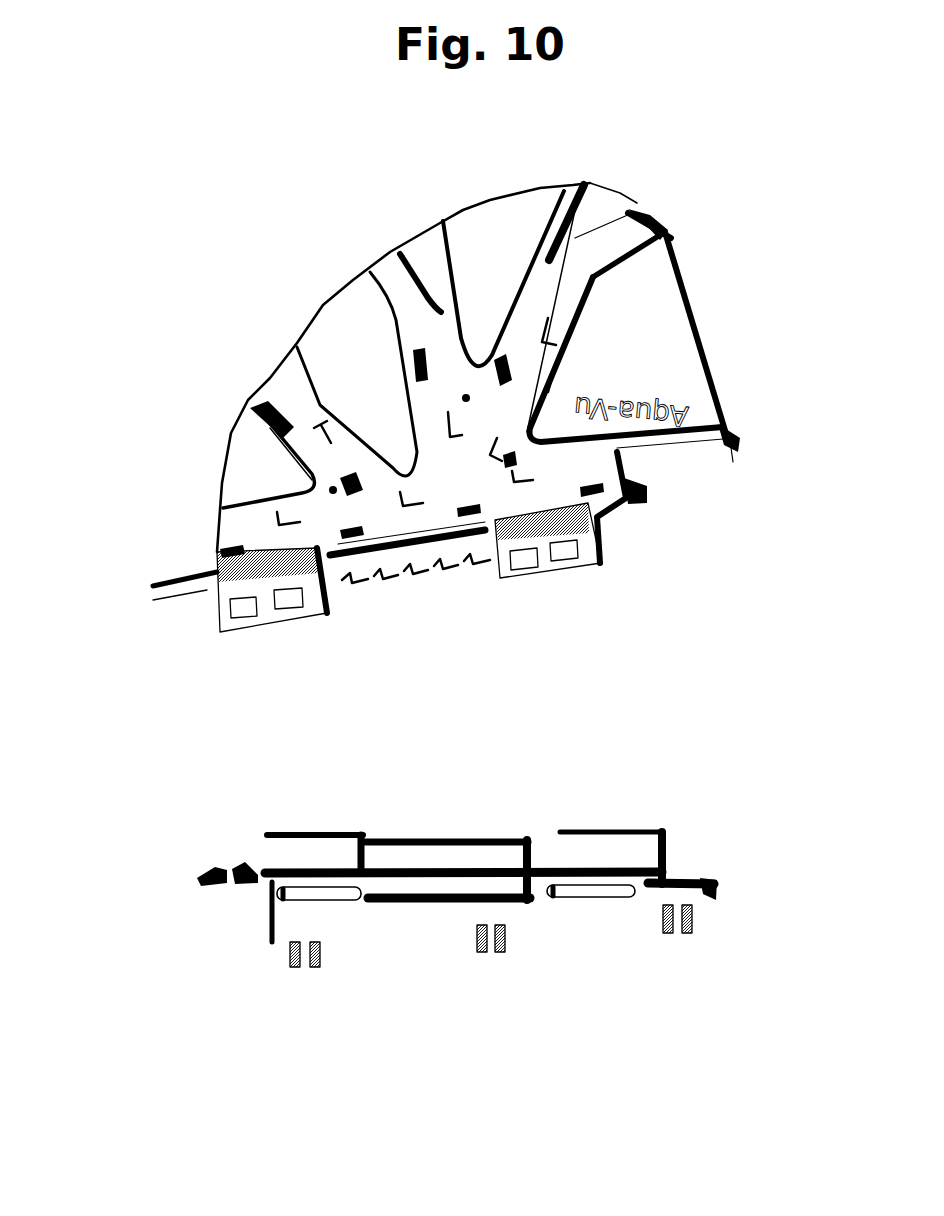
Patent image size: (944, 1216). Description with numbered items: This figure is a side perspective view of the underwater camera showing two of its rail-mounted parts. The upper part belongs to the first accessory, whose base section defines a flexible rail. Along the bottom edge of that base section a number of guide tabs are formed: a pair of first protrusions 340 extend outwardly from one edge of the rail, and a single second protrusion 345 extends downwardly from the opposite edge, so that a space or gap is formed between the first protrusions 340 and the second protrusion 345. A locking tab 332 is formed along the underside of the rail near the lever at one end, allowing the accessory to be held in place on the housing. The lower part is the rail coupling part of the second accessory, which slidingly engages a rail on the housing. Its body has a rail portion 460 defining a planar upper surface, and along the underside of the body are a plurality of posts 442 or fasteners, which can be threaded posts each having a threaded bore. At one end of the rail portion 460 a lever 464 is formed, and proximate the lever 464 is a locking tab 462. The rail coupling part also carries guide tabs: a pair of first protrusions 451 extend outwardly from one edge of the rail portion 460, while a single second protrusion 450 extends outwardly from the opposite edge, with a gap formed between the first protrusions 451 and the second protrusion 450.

The locking tab 332 is at (205, 592).
The first protrusions 340 is at (585, 560).
The second protrusion 345 is at (152, 597).
The posts 442 is at (304, 966).
The second protrusion 450 is at (446, 868).
The first protrusions 451 is at (315, 850).
The rail portion 460 is at (278, 884).
The locking tab 462 is at (237, 866).
The lever 464 is at (196, 880).